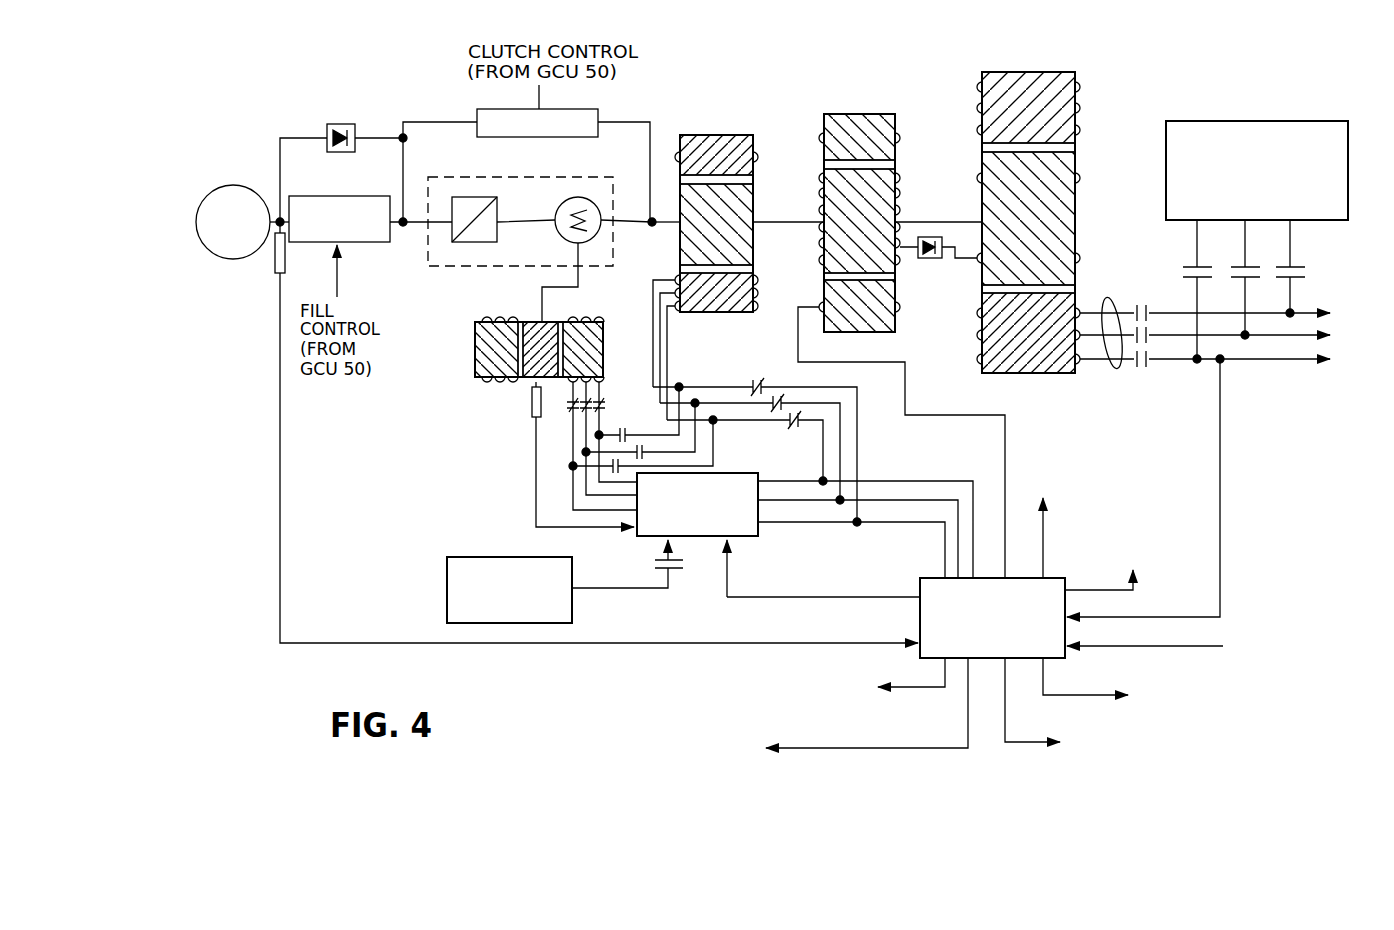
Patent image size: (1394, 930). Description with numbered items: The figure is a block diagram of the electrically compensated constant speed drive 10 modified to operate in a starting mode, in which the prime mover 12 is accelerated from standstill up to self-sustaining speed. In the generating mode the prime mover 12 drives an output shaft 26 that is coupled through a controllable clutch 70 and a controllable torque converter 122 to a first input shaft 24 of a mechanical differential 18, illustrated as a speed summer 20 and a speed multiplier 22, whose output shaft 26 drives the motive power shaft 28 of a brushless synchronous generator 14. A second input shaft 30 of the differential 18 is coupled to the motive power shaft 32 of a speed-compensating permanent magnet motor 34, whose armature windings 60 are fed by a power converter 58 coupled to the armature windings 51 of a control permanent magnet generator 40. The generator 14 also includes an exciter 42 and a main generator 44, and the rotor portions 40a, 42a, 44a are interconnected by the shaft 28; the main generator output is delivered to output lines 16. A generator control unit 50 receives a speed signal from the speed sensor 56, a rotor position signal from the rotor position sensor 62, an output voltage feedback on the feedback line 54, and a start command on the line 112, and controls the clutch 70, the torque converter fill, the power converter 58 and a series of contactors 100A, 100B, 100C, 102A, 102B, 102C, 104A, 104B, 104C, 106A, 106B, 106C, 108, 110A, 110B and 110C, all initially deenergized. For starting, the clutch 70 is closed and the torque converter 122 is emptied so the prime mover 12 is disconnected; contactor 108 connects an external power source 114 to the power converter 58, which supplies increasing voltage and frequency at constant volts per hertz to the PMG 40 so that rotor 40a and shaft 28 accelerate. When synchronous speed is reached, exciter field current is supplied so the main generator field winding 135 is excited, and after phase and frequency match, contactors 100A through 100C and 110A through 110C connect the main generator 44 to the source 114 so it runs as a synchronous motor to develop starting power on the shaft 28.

The electrically compensated constant speed drive 10 is at (401, 106).
The prime mover 12 is at (233, 185).
The brushless synchronous generator 14 is at (890, 108).
The output lines 16 is at (1116, 310).
The mechanical differential 18 is at (485, 267).
The speed summer 20 is at (600, 211).
The speed multiplier 22 is at (482, 205).
The first input shaft 24 is at (403, 228).
The output shaft 26 is at (279, 217).
The motive power shaft 28 is at (652, 227).
The second input shaft 30 is at (576, 262).
The motive power shaft 32 is at (541, 317).
The speed-compensating dynamoelectric machine 34 is at (475, 351).
The control permanent magnet generator 40 is at (744, 136).
The rotor portion of the control PMG 40a is at (686, 255).
The exciter 42 is at (862, 114).
The rotor portion of the exciter 42a is at (823, 196).
The main generator 44 is at (1066, 74).
The rotor portion of the main generator 44a is at (982, 172).
The generator control unit 50 is at (934, 580).
The armature windings of the control PMG 51 is at (672, 308).
The feedback line 54 is at (1220, 450).
The speed sensor 56 is at (275, 268).
The power converter 58 is at (745, 537).
The armature windings of the PMM 60 is at (592, 322).
The rotor position sensor 62 is at (532, 400).
The electrically controlled clutch 70 is at (480, 137).
The contactor 100A is at (1147, 306).
The contactor 100B is at (1134, 360).
The contactor 100C is at (1150, 366).
The contactor 102A is at (571, 410).
The contactor 102B is at (584, 411).
The contactor 102C is at (604, 406).
The contactor 104A is at (797, 428).
The contactor 104B is at (782, 400).
The contactor 104C is at (752, 384).
The contactor 106A is at (585, 466).
The contactor 106B is at (652, 452).
The contactor 106C is at (580, 462).
The contactor 108 is at (655, 566).
The contactor 110A is at (1293, 266).
The contactor 110B is at (1243, 266).
The contactor 110C is at (1190, 266).
The line 112 is at (1134, 647).
The external power source 114 is at (1212, 121).
The controllable torque converter 122 is at (350, 196).
The field winding of the main generator 135 is at (978, 265).